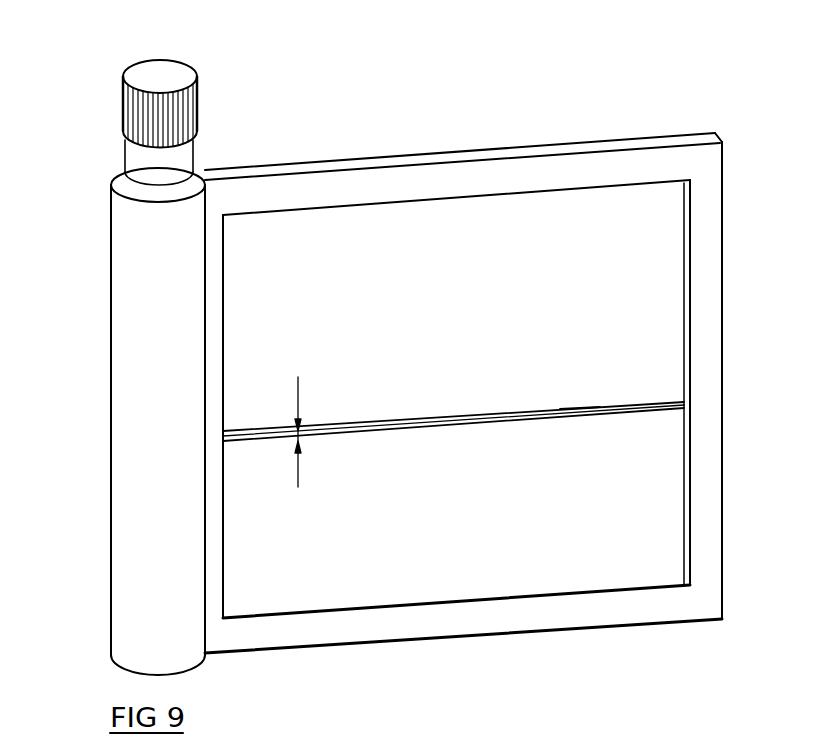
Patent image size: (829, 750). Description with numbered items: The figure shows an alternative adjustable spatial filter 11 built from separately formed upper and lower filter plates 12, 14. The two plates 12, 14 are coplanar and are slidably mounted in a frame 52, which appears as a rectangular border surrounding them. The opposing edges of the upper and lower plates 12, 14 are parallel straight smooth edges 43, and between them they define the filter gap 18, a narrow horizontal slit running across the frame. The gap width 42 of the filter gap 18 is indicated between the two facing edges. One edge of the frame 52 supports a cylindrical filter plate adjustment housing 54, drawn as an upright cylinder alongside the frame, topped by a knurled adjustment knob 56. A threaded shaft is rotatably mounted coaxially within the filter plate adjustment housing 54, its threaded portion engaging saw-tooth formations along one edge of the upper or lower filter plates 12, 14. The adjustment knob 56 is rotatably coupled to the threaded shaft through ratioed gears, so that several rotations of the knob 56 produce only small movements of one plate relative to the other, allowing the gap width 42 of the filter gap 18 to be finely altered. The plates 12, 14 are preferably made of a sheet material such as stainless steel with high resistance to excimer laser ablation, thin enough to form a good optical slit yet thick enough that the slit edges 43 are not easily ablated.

The adjustable spatial filter 11 is at (95, 620).
The upper filter plate 12 is at (597, 222).
The lower filter plate 14 is at (660, 520).
The filter gap 18 is at (632, 413).
The gap width 42 is at (315, 430).
The straight smooth edges 43 is at (570, 408).
The frame 52 is at (640, 165).
The filter plate adjustment housing 54 is at (130, 334).
The adjustment knob 56 is at (172, 80).